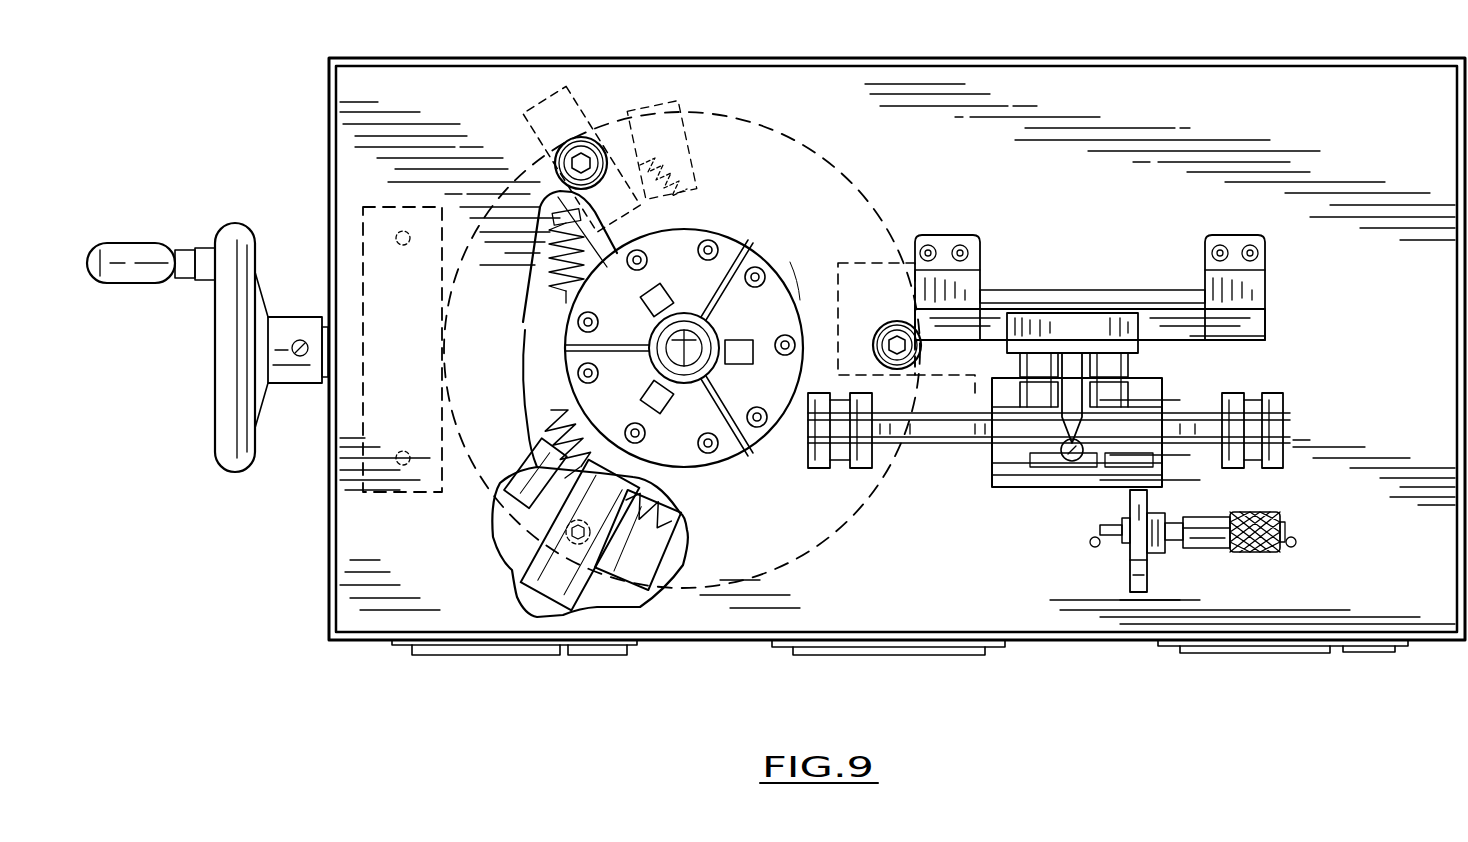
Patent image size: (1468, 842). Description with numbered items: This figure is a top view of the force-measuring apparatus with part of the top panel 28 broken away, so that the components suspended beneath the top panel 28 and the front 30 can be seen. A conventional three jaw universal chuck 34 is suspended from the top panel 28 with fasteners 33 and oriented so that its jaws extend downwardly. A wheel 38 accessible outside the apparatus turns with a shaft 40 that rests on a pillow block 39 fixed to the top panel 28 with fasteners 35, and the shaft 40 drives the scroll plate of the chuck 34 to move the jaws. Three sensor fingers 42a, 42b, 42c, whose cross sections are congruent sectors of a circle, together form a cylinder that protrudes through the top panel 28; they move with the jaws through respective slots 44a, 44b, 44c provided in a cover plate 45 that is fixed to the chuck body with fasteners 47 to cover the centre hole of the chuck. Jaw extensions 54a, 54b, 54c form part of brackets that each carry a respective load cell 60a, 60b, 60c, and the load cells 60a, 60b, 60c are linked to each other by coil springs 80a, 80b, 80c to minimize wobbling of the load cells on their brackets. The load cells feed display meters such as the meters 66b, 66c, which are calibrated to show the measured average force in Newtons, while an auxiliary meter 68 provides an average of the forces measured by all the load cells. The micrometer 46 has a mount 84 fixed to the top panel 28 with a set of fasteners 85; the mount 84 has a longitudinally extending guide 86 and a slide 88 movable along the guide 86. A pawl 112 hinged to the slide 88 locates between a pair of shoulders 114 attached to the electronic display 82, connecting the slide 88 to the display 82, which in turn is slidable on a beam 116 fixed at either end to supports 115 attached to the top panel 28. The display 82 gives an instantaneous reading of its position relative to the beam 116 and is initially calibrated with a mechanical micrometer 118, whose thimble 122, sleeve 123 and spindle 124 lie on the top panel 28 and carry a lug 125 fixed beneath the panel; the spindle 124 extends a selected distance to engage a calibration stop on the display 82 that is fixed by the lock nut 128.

The top panel 28 is at (1188, 77).
The front panel 30 is at (362, 645).
The fasteners 33 is at (560, 150).
The three jaw universal chuck 34 is at (848, 152).
The fasteners 35 is at (396, 238).
The wheel 38 is at (238, 230).
The pillow block 39 is at (368, 495).
The shaft 40 is at (355, 318).
The sensor finger 42a is at (700, 335).
The sensor finger 42b is at (668, 390).
The sensor finger 42c is at (693, 320).
The slot 44a is at (728, 365).
The slot 44b is at (648, 380).
The slot 44c is at (660, 310).
The cover plate 45 is at (800, 400).
The micrometer 46 is at (1069, 221).
The fasteners 47 is at (710, 240).
The jaw extension 54a is at (790, 230).
The jaw extension 54b is at (495, 553).
The jaw extension 54c is at (700, 232).
The load cell 60a is at (900, 301).
The load cell 60b is at (520, 470).
The load cell 60c is at (688, 118).
The display meter 66b is at (880, 656).
The display meter 66c is at (500, 656).
The auxiliary meter 68 is at (1275, 654).
The coil spring 80a is at (690, 505).
The coil spring 80b is at (545, 412).
The coil spring 80c is at (690, 145).
The electronic display 82 is at (995, 482).
The mount 84 is at (1178, 292).
The fasteners 85 is at (958, 232).
The guide 86 is at (1225, 325).
The slide 88 is at (1100, 315).
The pawl 112 is at (1068, 458).
The shoulders 114 is at (1042, 416).
The supports 115 is at (848, 462).
The beam 116 is at (935, 440).
The mechanical micrometer 118 is at (1176, 541).
The thimble 122 is at (1215, 518).
The sleeve 123 is at (1180, 548).
The spindle 124 is at (1100, 545).
The lug 125 is at (1147, 580).
The lock nut 128 is at (1158, 525).